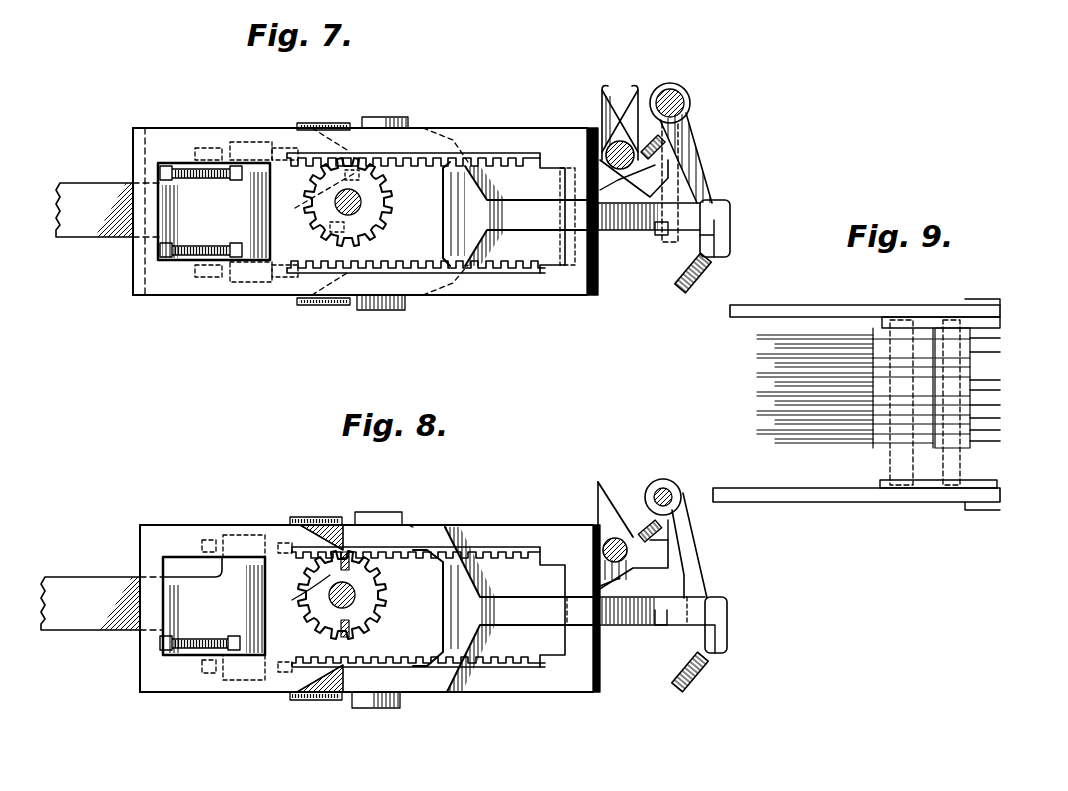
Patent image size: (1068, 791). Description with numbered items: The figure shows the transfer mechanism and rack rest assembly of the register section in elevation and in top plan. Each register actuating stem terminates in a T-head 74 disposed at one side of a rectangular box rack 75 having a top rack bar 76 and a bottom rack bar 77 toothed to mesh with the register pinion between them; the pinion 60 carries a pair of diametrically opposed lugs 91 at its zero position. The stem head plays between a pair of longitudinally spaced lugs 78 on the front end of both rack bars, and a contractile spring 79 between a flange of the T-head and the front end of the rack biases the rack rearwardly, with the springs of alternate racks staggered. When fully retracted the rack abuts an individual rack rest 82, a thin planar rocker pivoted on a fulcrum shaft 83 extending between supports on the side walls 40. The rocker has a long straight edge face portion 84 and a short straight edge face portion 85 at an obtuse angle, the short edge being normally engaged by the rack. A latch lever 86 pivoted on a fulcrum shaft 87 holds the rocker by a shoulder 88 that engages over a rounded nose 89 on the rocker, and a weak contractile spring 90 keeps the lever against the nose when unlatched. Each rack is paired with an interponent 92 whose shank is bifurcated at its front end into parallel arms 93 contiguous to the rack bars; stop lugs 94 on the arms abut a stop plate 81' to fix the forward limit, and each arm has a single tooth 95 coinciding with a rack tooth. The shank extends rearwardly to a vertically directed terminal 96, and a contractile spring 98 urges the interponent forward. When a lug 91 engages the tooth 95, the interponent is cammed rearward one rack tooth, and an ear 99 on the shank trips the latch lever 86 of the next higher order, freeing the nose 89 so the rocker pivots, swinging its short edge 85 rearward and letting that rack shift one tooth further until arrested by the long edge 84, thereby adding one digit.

In FIG. 9, the side wall 40 is at (916, 305).
In FIG. 7, the pinion gear 60 is at (390, 204).
In FIG. 8, the pinion gear 60 is at (388, 593).
In FIG. 7, the T-head 74 is at (268, 195).
In FIG. 8, the T-head 74 is at (266, 640).
In FIG. 7, the box rack 75 is at (169, 298).
In FIG. 8, the box rack 75 is at (603, 694).
In FIG. 9, the box rack 75 is at (795, 400).
In FIG. 7, the top rack bar 76 is at (489, 128).
In FIG. 8, the top rack bar 76 is at (540, 526).
In FIG. 7, the bottom rack bar 77 is at (508, 296).
In FIG. 8, the bottom rack bar 77 is at (512, 693).
In FIG. 7, the lugs 78 is at (212, 147).
In FIG. 8, the lugs 78 is at (209, 539).
In FIG. 7, the contractile spring 79 is at (210, 243).
In FIG. 8, the contractile spring 79 is at (195, 651).
In FIG. 7, the stop plate 81' is at (320, 209).
In FIG. 8, the stop plate 81' is at (312, 606).
In FIG. 7, the rack rest 82 is at (609, 100).
In FIG. 8, the rack rest 82 is at (608, 508).
In FIG. 9, the rack rest 82 is at (880, 330).
In FIG. 7, the fulcrum shaft 83 is at (605, 152).
In FIG. 8, the fulcrum shaft 83 is at (603, 550).
In FIG. 9, the fulcrum shaft 83 is at (898, 469).
In FIG. 7, the long straight edge face portion 84 is at (602, 100).
In FIG. 8, the long straight edge face portion 84 is at (598, 496).
In FIG. 7, the short straight edge face portion 85 is at (600, 190).
In FIG. 8, the short straight edge face portion 85 is at (612, 586).
In FIG. 7, the latch lever 86 is at (713, 202).
In FIG. 8, the latch lever 86 is at (700, 584).
In FIG. 9, the latch lever 86 is at (1000, 382).
In FIG. 7, the fulcrum shaft 87 is at (686, 100).
In FIG. 8, the fulcrum shaft 87 is at (668, 490).
In FIG. 9, the fulcrum shaft 87 is at (955, 469).
In FIG. 7, the shoulder 88 is at (680, 166).
In FIG. 8, the shoulder 88 is at (682, 570).
In FIG. 7, the nose 89 is at (690, 181).
In FIG. 8, the nose 89 is at (680, 551).
In FIG. 7, the contractile spring 90 is at (668, 140).
In FIG. 8, the contractile spring 90 is at (650, 526).
In FIG. 7, the lugs 91 is at (314, 211).
In FIG. 8, the lugs 91 is at (300, 591).
In FIG. 7, the interponent 92 is at (533, 207).
In FIG. 8, the interponent 92 is at (518, 598).
In FIG. 9, the interponent 92 is at (812, 430).
In FIG. 7, the arms 93 is at (457, 200).
In FIG. 8, the arms 93 is at (468, 550).
In FIG. 7, the stop lugs 94 is at (395, 117).
In FIG. 8, the stop lugs 94 is at (380, 512).
In FIG. 8, the tooth 95 is at (350, 551).
In FIG. 7, the terminal 96 is at (731, 236).
In FIG. 8, the terminal 96 is at (728, 639).
In FIG. 7, the contractile spring 98 is at (679, 272).
In FIG. 8, the contractile spring 98 is at (692, 682).
In FIG. 7, the ear 99 is at (658, 234).
In FIG. 8, the ear 99 is at (661, 626).